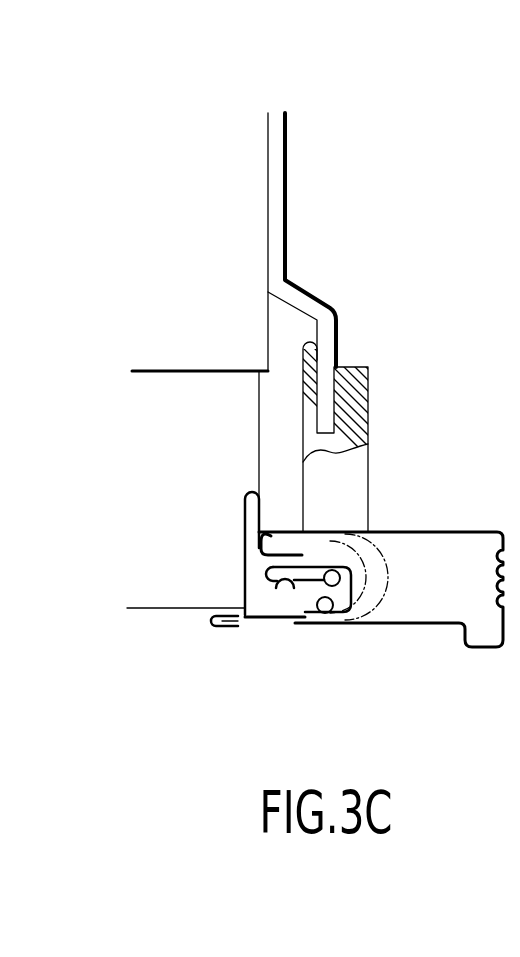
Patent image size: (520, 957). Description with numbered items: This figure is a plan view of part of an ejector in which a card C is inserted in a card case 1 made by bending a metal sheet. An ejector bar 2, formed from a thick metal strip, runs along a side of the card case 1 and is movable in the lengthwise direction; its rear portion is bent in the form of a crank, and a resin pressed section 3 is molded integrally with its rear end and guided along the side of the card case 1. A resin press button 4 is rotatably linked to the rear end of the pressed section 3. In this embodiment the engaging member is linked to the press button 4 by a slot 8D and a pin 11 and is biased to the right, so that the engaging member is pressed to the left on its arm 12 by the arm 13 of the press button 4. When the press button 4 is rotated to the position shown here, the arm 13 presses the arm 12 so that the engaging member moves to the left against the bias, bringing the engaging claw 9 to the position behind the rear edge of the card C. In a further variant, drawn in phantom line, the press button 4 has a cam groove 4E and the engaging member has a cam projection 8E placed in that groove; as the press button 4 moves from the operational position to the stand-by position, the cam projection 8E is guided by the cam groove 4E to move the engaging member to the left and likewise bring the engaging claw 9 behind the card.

The card case 1 is at (235, 247).
The ejector bar 2 is at (277, 184).
The pressed section 3 is at (348, 384).
The press button 4 is at (437, 607).
The cam groove 4E is at (365, 597).
The slot 8D is at (275, 590).
The cam projection 8E is at (325, 613).
The engaging claw 9 is at (222, 628).
The pin 11 is at (333, 578).
The arm 12 is at (253, 500).
The arm 13 is at (270, 538).
The card C is at (220, 380).